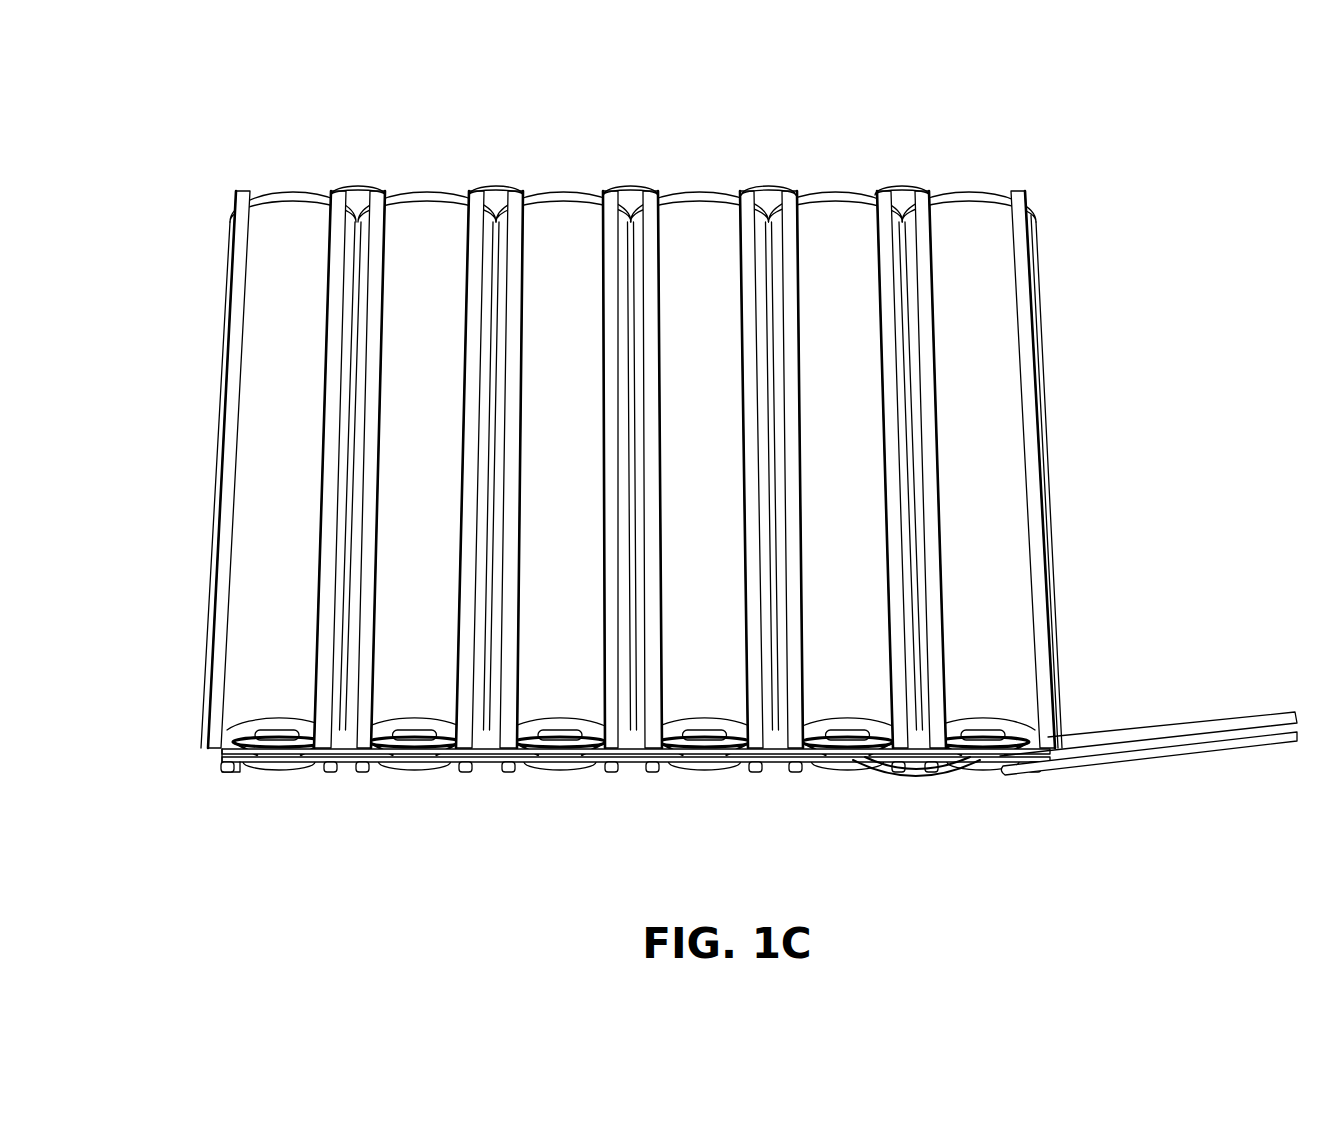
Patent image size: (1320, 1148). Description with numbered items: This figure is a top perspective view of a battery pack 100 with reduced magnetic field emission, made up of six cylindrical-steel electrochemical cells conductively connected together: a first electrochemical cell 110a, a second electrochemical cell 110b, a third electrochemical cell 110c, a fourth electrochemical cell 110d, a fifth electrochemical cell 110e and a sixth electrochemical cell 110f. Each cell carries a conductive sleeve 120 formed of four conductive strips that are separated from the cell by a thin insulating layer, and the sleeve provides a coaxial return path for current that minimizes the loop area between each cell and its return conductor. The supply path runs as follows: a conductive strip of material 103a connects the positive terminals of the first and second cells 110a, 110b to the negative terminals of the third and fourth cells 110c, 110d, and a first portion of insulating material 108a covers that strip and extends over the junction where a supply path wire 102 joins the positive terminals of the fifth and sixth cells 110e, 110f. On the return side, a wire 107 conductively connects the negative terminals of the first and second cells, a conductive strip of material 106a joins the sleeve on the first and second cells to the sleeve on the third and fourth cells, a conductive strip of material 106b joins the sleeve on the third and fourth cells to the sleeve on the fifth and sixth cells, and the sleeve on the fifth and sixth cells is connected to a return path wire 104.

The battery pack 100 is at (195, 110).
The first electrochemical cell 110a is at (290, 222).
The second electrochemical cell 110b is at (425, 220).
The third electrochemical cell 110c is at (550, 222).
The fourth electrochemical cell 110d is at (700, 225).
The fifth electrochemical cell 110e is at (832, 225).
The sixth electrochemical cell 110f is at (967, 222).
The wire 107 is at (362, 192).
The conductive strip of material 106b is at (633, 192).
The conductive strip of material 106a is at (482, 764).
The first portion of insulating material 108a is at (636, 770).
The conductive strip of material 103a is at (254, 729).
The conductive sleeve 120 is at (331, 774).
The supply path wire 102 is at (1103, 738).
The return path wire 104 is at (915, 784).